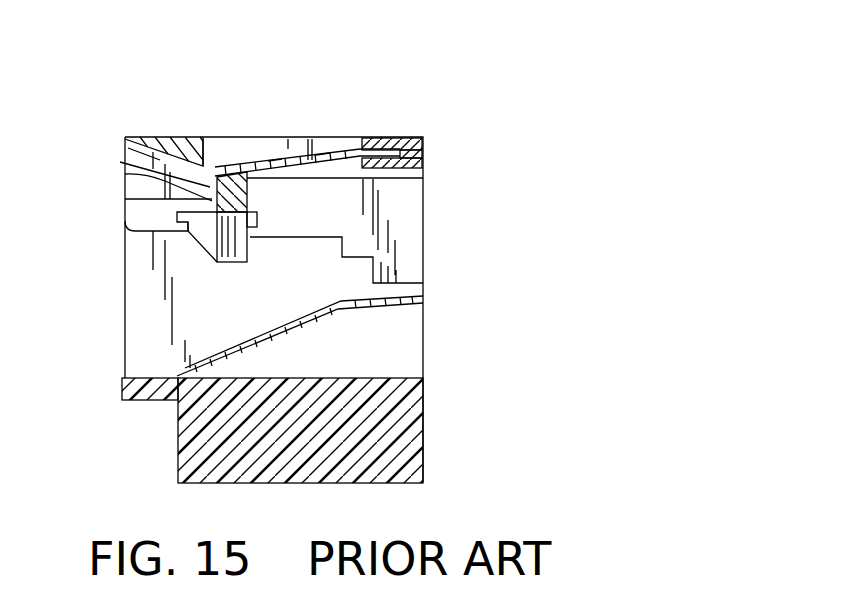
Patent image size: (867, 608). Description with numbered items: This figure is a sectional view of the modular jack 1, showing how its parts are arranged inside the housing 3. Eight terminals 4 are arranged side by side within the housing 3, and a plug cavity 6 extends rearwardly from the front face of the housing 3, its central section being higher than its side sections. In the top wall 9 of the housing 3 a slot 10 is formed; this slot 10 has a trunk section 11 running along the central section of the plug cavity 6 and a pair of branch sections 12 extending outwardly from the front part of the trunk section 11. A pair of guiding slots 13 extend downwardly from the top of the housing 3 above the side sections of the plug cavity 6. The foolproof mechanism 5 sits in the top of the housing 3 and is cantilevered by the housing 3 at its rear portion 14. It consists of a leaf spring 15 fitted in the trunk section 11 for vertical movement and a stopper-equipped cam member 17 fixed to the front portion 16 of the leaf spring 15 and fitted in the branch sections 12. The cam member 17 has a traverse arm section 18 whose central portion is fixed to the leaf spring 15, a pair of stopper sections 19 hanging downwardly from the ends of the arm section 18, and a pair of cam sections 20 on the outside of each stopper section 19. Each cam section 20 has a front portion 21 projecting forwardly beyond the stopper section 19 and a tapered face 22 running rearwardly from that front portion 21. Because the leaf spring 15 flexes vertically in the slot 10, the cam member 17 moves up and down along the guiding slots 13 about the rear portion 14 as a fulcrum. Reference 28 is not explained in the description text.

The modular jack 1 is at (465, 232).
The housing 3 is at (417, 397).
The terminals 4 is at (247, 333).
The foolproof mechanism 5 is at (261, 148).
The plug cavity 6 is at (155, 343).
The top wall 9 is at (413, 136).
The slot 10 is at (275, 148).
The trunk section 11 is at (342, 136).
The branch sections 12 is at (227, 136).
The guiding slots 13 is at (231, 136).
The rear portion 14 is at (393, 136).
The leaf spring 15 is at (323, 148).
The front portion 16 is at (190, 137).
The stopper-equipped cam member 17 is at (120, 162).
The traverse arm section 18 is at (250, 197).
The stopper sections 19 is at (255, 252).
The cam sections 20 is at (205, 258).
The front portion 21 is at (185, 233).
The tapered face 22 is at (202, 244).
The passage 28 is at (125, 174).